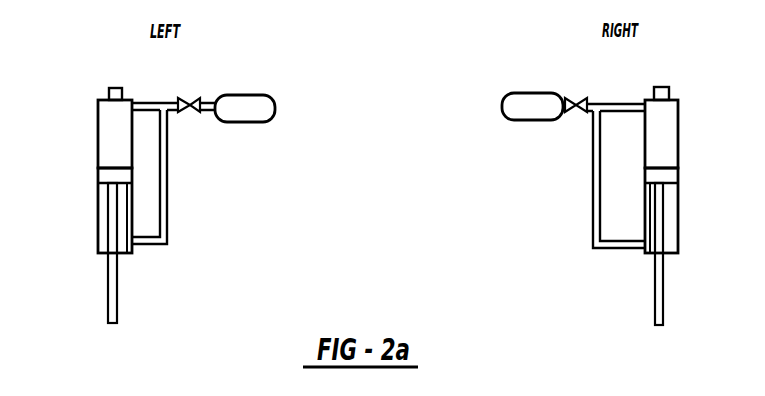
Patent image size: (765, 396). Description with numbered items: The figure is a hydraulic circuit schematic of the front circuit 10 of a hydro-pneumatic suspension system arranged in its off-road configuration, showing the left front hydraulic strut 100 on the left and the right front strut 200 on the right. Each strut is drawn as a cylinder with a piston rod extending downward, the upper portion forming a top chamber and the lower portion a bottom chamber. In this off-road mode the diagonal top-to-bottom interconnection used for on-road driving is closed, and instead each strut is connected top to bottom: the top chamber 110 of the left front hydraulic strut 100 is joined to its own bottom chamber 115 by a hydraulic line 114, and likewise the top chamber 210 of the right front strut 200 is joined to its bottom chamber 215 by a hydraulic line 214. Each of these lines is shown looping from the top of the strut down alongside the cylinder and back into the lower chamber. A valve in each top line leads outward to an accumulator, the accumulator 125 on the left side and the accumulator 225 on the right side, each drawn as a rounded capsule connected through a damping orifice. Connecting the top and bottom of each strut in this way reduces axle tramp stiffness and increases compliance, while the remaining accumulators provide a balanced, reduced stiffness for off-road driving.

The left front hydraulic strut 100 is at (88, 72).
The front circuit 10 is at (75, 205).
The top chamber 110 is at (97, 125).
The bottom chamber 115 is at (98, 230).
The hydraulic line 114 is at (168, 198).
The accumulator 125 is at (275, 108).
The right front strut 200 is at (686, 92).
The top chamber 210 is at (678, 137).
The bottom chamber 215 is at (679, 238).
The hydraulic line 214 is at (594, 194).
The accumulator 225 is at (502, 108).